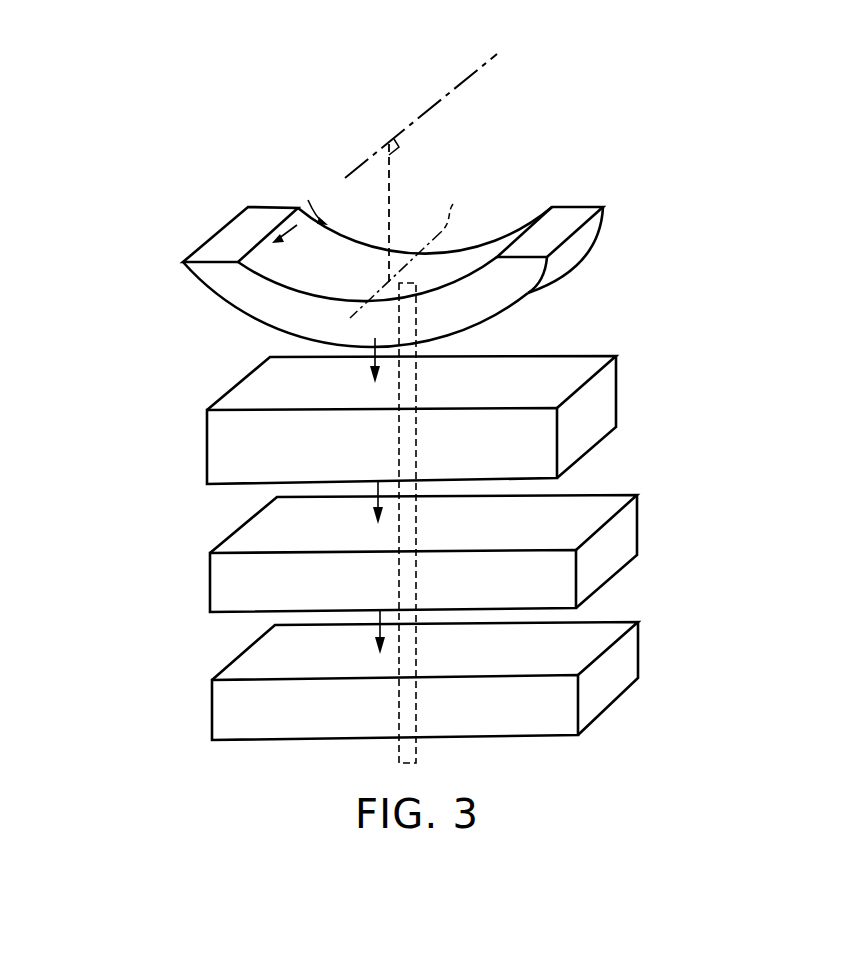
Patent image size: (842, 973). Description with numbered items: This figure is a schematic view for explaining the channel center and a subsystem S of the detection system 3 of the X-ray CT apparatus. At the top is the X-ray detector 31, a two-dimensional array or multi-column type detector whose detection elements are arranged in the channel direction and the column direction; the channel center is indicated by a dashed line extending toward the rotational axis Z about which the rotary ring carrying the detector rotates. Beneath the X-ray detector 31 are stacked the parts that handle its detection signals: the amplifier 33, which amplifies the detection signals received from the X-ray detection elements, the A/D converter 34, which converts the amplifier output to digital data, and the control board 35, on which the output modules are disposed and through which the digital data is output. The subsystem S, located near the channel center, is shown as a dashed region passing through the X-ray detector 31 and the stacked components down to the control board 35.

The detection system 3 is at (152, 598).
The X-ray detector 31 is at (604, 227).
The amplifier 33 is at (617, 402).
The A/D converter 34 is at (638, 527).
The control board 35 is at (641, 652).
The subsystem S is at (418, 753).
The rotational axis Z is at (452, 96).